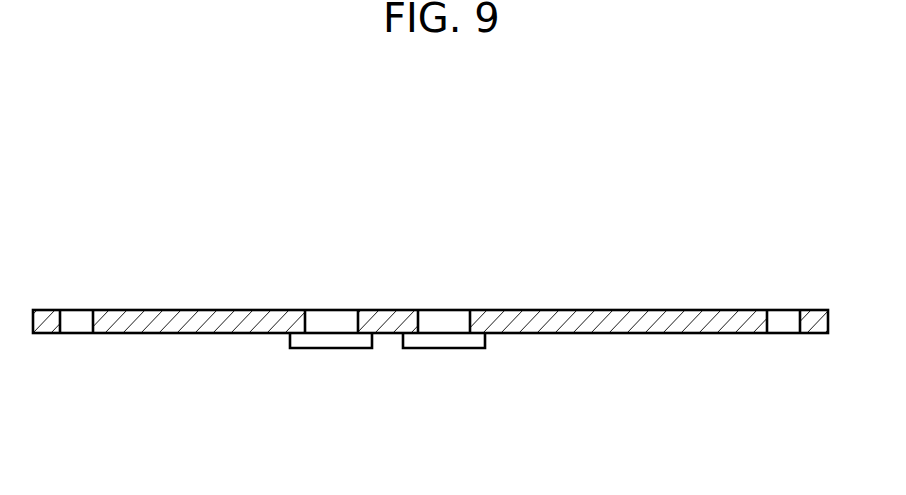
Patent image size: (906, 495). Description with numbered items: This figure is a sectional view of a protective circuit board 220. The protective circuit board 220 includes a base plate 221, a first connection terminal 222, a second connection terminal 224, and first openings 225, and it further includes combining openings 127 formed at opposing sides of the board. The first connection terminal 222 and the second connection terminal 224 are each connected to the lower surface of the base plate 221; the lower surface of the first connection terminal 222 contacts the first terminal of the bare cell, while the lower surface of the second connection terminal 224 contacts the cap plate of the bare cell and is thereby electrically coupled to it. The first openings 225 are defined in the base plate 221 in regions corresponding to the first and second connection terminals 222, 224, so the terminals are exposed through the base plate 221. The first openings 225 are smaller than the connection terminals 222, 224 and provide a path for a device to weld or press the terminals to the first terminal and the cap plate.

The protective circuit board 220 is at (686, 200).
The base plate 221 is at (586, 318).
The combining openings 127 is at (76, 318).
The first openings 225 is at (427, 318).
The second connection terminal 224 is at (336, 340).
The first connection terminal 222 is at (448, 340).